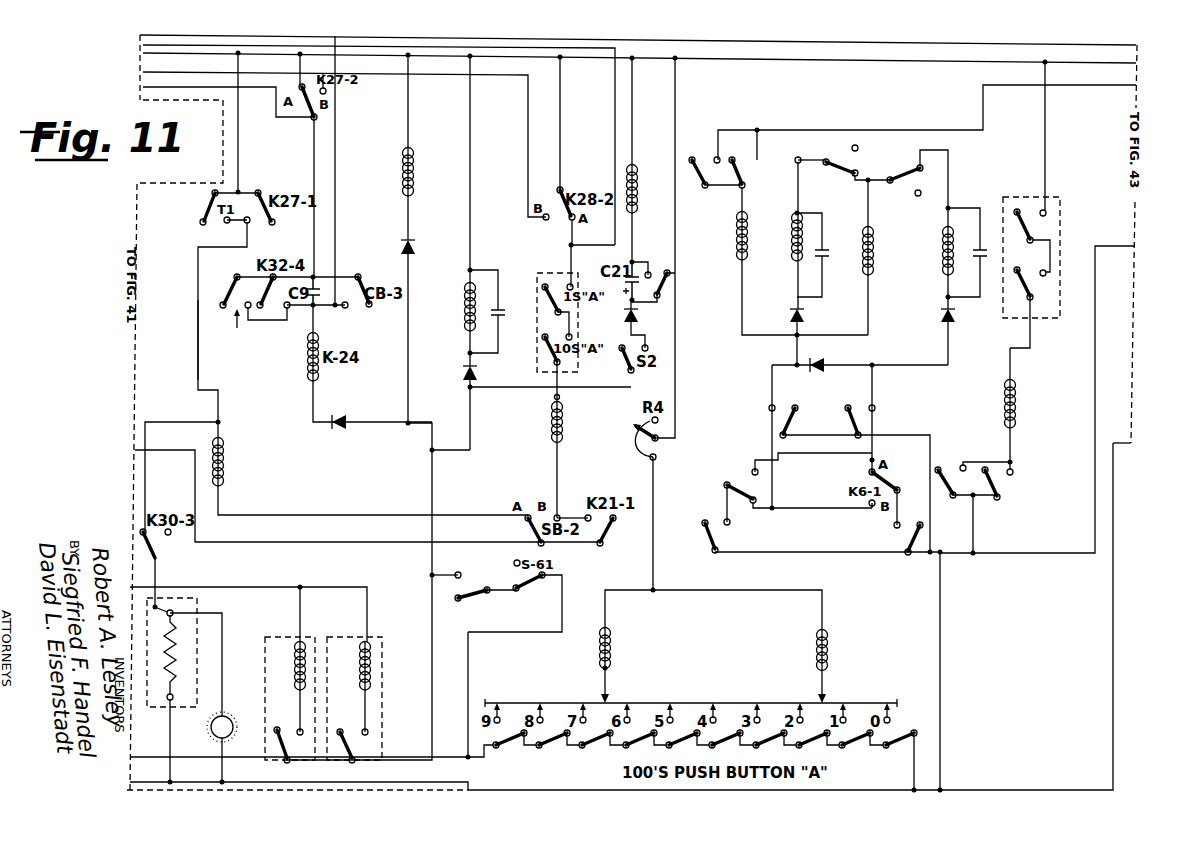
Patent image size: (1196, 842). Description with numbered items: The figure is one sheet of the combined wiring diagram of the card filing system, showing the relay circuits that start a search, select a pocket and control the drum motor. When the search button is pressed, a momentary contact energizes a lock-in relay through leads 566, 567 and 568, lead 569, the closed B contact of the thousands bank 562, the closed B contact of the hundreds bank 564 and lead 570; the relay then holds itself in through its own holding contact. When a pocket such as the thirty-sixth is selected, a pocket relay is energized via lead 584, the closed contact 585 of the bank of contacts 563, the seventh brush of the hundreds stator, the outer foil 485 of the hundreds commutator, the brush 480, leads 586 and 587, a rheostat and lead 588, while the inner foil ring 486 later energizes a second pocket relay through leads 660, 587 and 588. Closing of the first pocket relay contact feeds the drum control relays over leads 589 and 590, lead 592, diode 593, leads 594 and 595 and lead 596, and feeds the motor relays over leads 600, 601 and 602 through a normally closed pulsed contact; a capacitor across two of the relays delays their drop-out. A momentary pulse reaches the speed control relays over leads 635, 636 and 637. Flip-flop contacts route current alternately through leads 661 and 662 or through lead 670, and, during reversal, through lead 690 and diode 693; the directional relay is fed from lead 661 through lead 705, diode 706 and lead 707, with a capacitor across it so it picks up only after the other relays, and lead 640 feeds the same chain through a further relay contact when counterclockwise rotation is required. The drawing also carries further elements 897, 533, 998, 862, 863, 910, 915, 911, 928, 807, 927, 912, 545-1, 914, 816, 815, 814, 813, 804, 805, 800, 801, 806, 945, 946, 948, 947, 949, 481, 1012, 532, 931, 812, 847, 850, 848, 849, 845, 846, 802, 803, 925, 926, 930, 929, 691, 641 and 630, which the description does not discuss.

The lead 596 is at (140, 36).
The conductor 897 is at (143, 46).
The bus conductor 533 is at (152, 54).
The conductor 998 is at (143, 73).
The conductor 862 is at (143, 88).
The conductor 863 is at (302, 62).
The conductor 910 is at (240, 129).
The conductor 915 is at (335, 225).
The conductor 911 is at (198, 330).
The conductor 928 is at (162, 420).
The conductor 807 is at (135, 450).
The conductor 927 is at (160, 568).
The conductor 912 is at (320, 512).
The relay contact 545-1 is at (245, 330).
The conductor 914 is at (313, 315).
The diode 816 is at (358, 428).
The conductor 815 is at (408, 388).
The conductor 814 is at (471, 420).
The conductor 813 is at (432, 483).
The conductor 804 is at (560, 115).
The conductor 805 is at (568, 243).
The switch contact 800 is at (549, 292).
The switch contact 801 is at (542, 349).
The conductor 806 is at (556, 485).
The conductor 945 is at (613, 389).
The diode 946 is at (633, 318).
The conductor 948 is at (632, 120).
The conductor 947 is at (632, 234).
The conductor 949 is at (662, 304).
The lead 588 is at (675, 378).
The lead 587 is at (653, 505).
The lead 586 is at (605, 598).
The brush 480 is at (606, 682).
The lead 660 is at (823, 603).
The relay coil lead 481 is at (823, 688).
The foil on the hundreds commutator 485 is at (553, 703).
The inner foil ring 486 is at (786, 703).
The contact 585 is at (634, 726).
The bank of contacts 563 is at (904, 717).
The lead 584 is at (914, 765).
The conductor 1012 is at (470, 770).
The conductor 532 is at (556, 788).
The conductor 931 is at (218, 769).
The conductor 812 is at (498, 633).
The conductor 847 is at (432, 612).
The conductor 850 is at (140, 585).
The conductor 848 is at (380, 578).
The conductor 849 is at (302, 606).
The lamp coil 845 is at (294, 662).
The lamp coil 846 is at (371, 665).
The switch 802 is at (285, 744).
The switch 803 is at (356, 748).
The resistor 925 is at (183, 624).
The conductor 926 is at (172, 748).
The conductor 930 is at (224, 630).
The lamp 929 is at (226, 722).
The lead 637 is at (752, 122).
The lead 595 is at (886, 122).
The lead 636 is at (720, 188).
The lead 635 is at (740, 335).
The lead 594 is at (799, 192).
The diode 593 is at (804, 316).
The lead 602 is at (815, 160).
The lead 601 is at (869, 215).
The lead 600 is at (870, 328).
The lead 707 is at (949, 156).
The diode 706 is at (950, 320).
The lead 705 is at (949, 362).
The lead 592 is at (792, 353).
The diode 693 is at (818, 362).
The lead 662 is at (850, 362).
The conductor 691 is at (773, 480).
The conductor 641 is at (818, 436).
The lead 661 is at (873, 422).
The lead 690 is at (762, 452).
The lead 590 is at (765, 510).
The lead 670 is at (840, 512).
The lead 589 is at (822, 555).
The lead 640 is at (931, 515).
The lead 566 is at (941, 645).
The lead 567 is at (973, 556).
The conductor 630 is at (1096, 252).
The lead 568 is at (974, 535).
The lead 569 is at (1011, 445).
The lead 570 is at (1046, 135).
The hundreds bank 564 is at (1050, 217).
The thousands bank 562 is at (1042, 299).